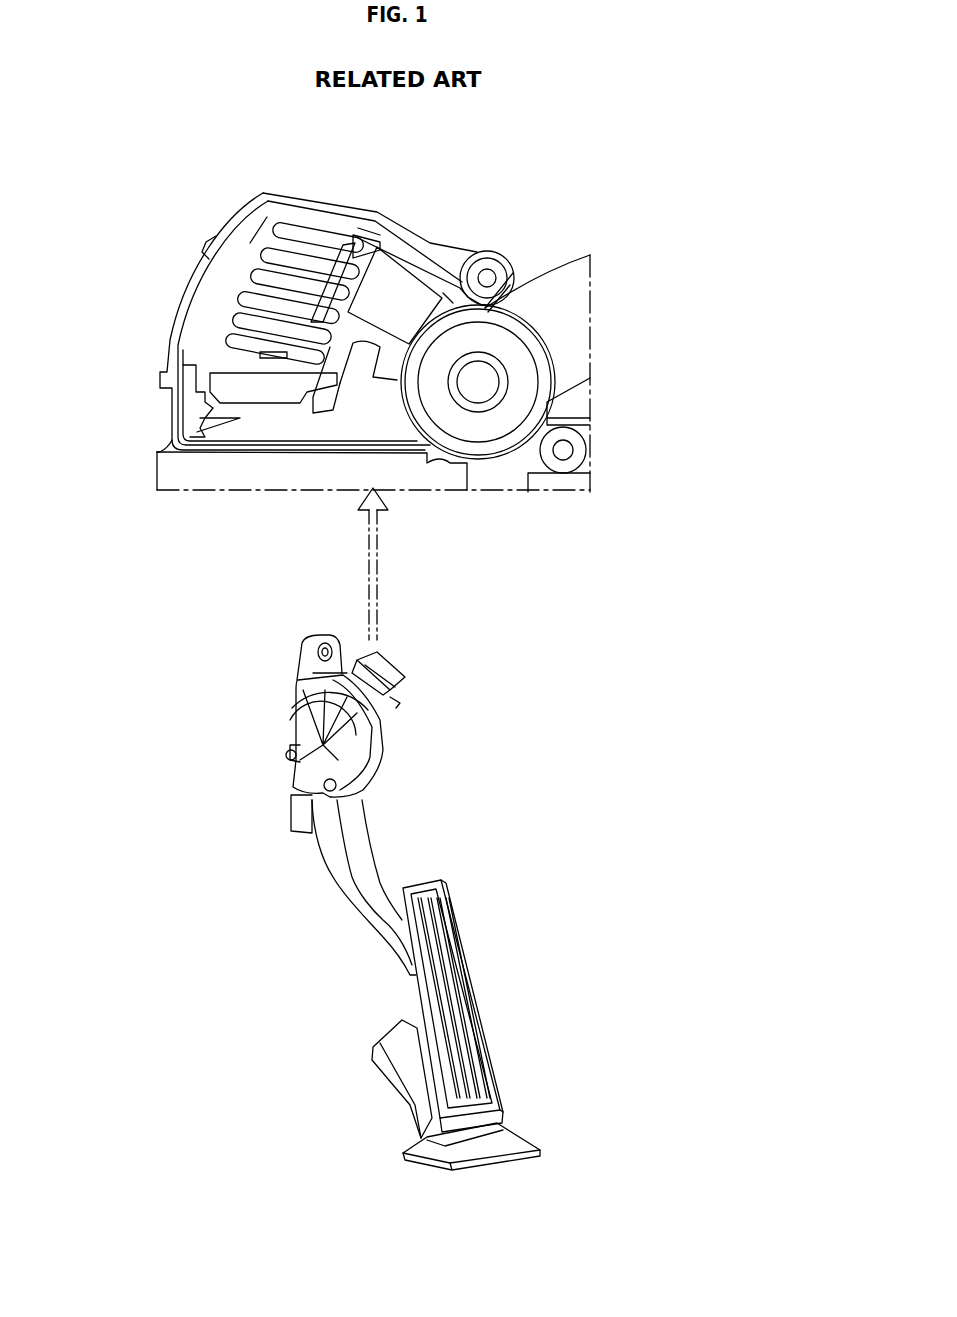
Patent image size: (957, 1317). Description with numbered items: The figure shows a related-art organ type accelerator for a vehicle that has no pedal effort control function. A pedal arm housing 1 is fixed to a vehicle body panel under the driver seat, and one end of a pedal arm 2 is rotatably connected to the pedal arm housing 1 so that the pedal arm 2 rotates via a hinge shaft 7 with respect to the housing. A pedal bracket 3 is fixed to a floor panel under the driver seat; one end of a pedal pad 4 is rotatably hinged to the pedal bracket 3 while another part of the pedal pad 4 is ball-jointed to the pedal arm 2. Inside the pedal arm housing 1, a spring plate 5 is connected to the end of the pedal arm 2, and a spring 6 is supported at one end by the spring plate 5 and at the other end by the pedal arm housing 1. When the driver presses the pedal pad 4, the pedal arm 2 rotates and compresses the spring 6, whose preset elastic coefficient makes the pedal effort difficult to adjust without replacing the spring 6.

The pedal arm housing 1 is at (207, 242).
The pedal arm 2 is at (573, 334).
The pedal bracket 3 is at (393, 1078).
The pedal pad 4 is at (457, 1005).
The spring plate 5 is at (258, 395).
The spring 6 is at (237, 324).
The hinge shaft 7 is at (478, 382).